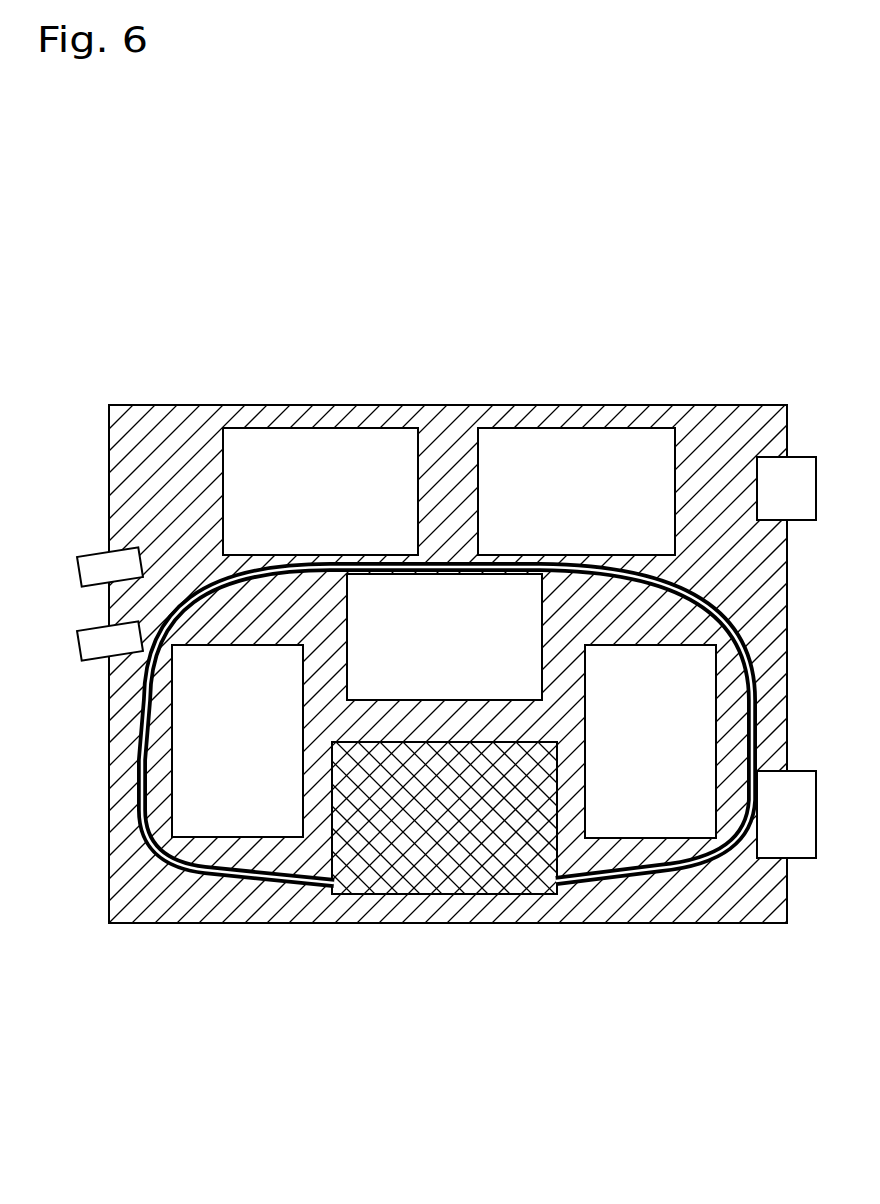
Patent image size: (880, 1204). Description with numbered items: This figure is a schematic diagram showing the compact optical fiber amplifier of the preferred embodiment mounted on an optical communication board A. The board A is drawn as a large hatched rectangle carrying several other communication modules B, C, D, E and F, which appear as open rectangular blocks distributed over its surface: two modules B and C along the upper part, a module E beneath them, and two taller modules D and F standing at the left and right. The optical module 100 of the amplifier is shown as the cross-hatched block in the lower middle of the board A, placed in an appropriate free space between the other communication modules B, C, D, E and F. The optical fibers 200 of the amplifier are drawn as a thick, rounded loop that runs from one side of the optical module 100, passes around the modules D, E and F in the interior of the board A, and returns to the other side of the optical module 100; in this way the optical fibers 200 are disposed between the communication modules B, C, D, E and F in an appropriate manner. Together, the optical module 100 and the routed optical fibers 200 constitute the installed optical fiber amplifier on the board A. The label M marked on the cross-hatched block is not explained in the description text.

The optical module 100 is at (477, 868).
The optical fibers 200 is at (247, 878).
The board A is at (440, 665).
The communication module B is at (320, 491).
The communication module C is at (576, 491).
The communication module D is at (237, 741).
The communication module E is at (444, 637).
The communication module F is at (650, 741).
The component M is at (438, 857).